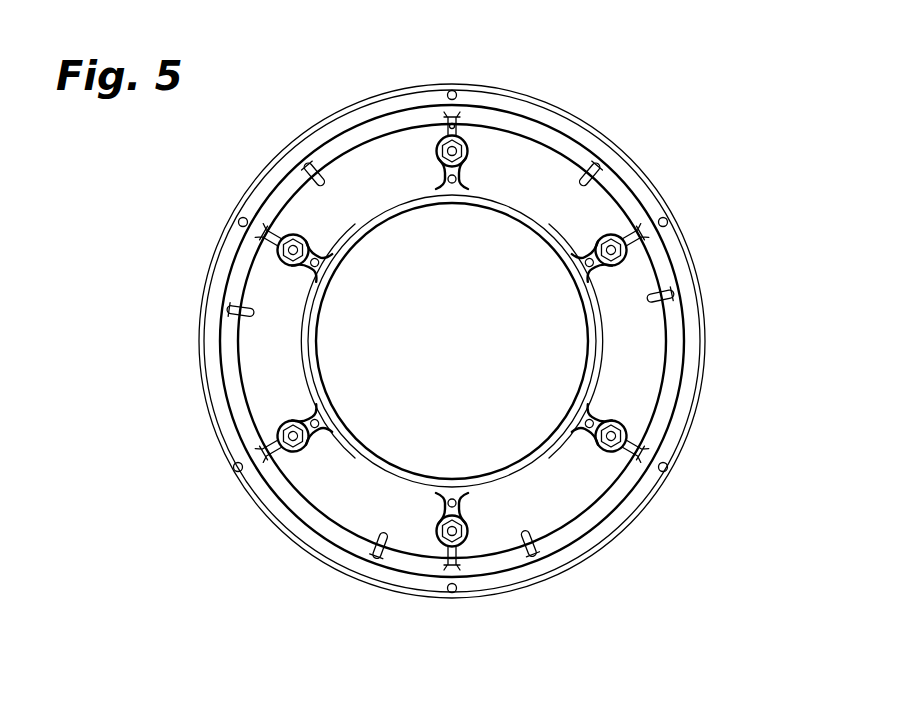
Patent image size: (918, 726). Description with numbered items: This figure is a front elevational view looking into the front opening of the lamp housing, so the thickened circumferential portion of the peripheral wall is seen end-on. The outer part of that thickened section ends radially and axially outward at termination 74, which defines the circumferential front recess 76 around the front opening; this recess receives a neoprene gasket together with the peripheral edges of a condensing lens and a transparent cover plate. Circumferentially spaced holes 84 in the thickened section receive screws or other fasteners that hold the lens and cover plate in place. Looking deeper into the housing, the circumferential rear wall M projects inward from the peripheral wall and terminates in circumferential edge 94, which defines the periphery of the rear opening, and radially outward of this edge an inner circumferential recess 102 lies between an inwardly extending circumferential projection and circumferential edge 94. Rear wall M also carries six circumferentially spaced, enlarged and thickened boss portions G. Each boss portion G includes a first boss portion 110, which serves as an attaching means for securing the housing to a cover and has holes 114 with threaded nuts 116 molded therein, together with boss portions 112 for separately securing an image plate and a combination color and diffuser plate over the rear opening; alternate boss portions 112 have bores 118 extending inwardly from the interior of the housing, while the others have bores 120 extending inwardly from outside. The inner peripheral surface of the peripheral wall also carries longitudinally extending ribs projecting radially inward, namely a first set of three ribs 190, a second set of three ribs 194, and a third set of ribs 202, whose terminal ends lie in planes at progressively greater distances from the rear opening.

The termination 74 is at (550, 575).
The circumferential front recess 76 is at (703, 372).
The circumferentially spaced holes 84 is at (668, 220).
The circumferential edge 94 is at (567, 428).
The inner circumferential recess 102 is at (432, 478).
The first boss portion 110 is at (446, 165).
The boss portions 112 is at (465, 186).
The holes 114 is at (466, 150).
The threaded nuts 116 is at (440, 162).
The bores 118 is at (451, 185).
The bores 120 is at (317, 267).
The first set of ribs 190 is at (462, 115).
The second set of ribs 194 is at (323, 178).
The third set of ribs 202 is at (598, 180).
The rear wall M is at (556, 172).
The boss portions G is at (488, 161).